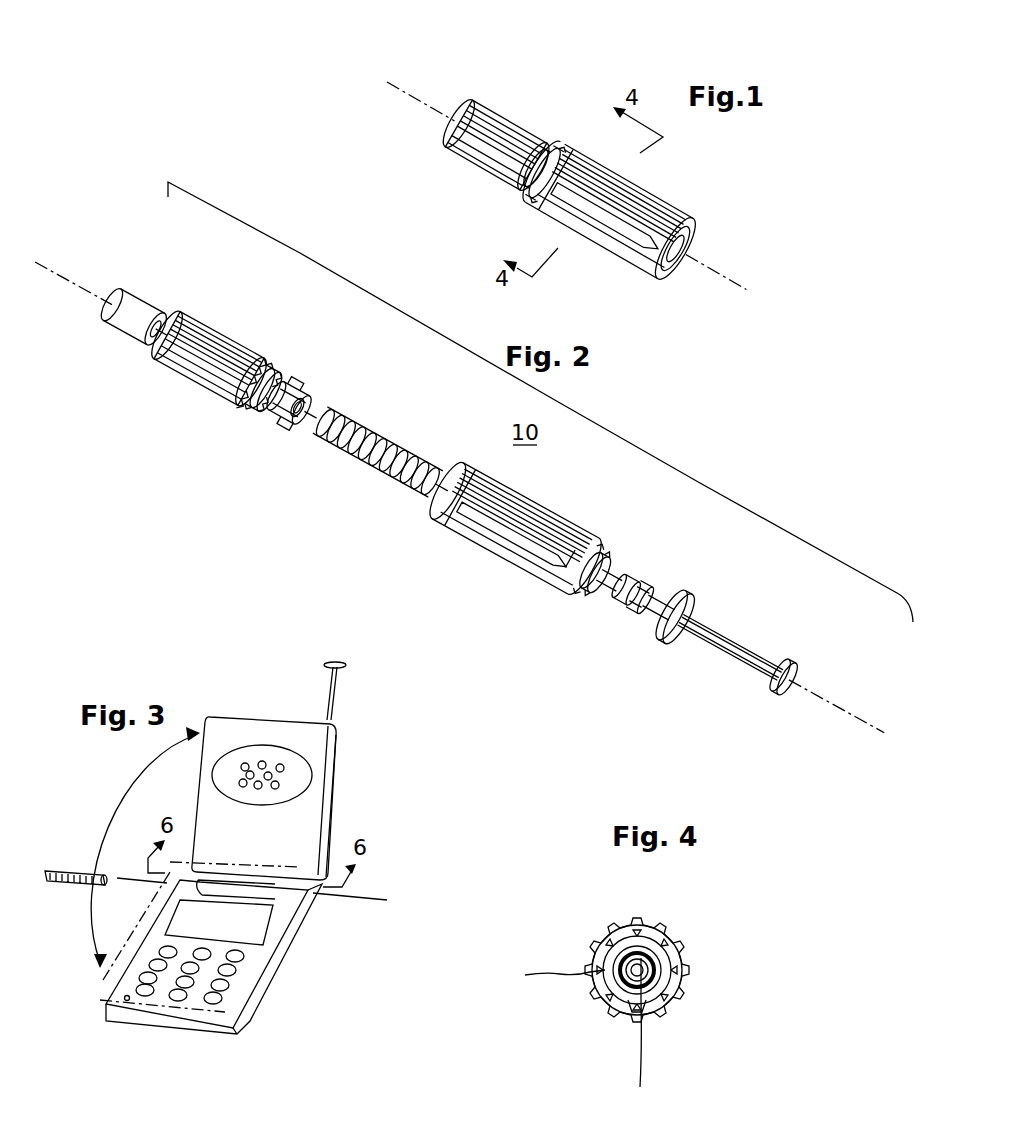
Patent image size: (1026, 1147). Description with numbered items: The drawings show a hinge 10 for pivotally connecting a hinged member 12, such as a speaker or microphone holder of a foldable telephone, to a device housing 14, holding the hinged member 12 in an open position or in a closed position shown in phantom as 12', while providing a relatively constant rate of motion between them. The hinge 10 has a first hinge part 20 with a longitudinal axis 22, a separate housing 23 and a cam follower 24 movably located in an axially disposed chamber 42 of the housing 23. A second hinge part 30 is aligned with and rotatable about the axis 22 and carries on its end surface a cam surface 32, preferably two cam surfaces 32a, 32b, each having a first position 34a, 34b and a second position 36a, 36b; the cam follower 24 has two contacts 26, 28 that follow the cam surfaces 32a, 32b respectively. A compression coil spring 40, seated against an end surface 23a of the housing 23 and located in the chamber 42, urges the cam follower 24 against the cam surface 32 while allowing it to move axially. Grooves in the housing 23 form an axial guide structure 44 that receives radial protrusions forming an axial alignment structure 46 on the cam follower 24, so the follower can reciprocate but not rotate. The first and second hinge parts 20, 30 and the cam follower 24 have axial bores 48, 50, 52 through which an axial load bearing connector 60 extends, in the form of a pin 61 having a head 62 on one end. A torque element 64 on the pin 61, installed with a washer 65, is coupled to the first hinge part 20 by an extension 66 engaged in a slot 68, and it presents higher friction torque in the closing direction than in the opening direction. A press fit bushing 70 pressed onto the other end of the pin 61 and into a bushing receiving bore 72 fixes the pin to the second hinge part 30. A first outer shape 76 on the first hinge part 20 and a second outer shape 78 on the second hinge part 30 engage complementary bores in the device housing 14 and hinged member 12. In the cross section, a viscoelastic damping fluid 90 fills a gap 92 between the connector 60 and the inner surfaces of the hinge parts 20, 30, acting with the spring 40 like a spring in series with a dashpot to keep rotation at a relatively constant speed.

In FIG. 1, the hinge 10 is at (672, 298).
In FIG. 3, the hinge 10 is at (75, 863).
In FIG. 3, the hinged member 12 is at (286, 780).
In FIG. 3, the hinged member in closed position 12' is at (125, 942).
In FIG. 3, the device housing 14 is at (290, 927).
In FIG. 1, the first hinge part 20 is at (607, 243).
In FIG. 2, the first hinge part 20 is at (483, 540).
In FIG. 4, the first hinge part 20 is at (641, 950).
In FIG. 1, the longitudinal axis 22 is at (730, 273).
In FIG. 2, the longitudinal axis 22 is at (847, 710).
In FIG. 3, the longitudinal axis 22 is at (377, 903).
In FIG. 1, the housing 23 is at (688, 210).
In FIG. 2, the housing 23 is at (432, 523).
In FIG. 4, the housing 23 is at (687, 993).
In FIG. 2, the end surface 23a is at (595, 533).
In FIG. 1, the cam follower 24 is at (520, 190).
In FIG. 2, the cam follower 24 is at (273, 433).
In FIG. 4, the cam follower 24 is at (662, 975).
In FIG. 2, the contact 26 is at (260, 420).
In FIG. 2, the contact 28 is at (298, 378).
In FIG. 1, the second hinge part 30 is at (447, 150).
In FIG. 2, the second hinge part 30 is at (173, 367).
In FIG. 1, the cam surface 32 is at (508, 187).
In FIG. 2, the first cam surface 32a is at (237, 397).
In FIG. 2, the second cam surface 32b is at (257, 407).
In FIG. 2, the first position 34a is at (203, 400).
In FIG. 2, the first position 34b is at (263, 368).
In FIG. 2, the second position 36a is at (247, 365).
In FIG. 2, the second position 36b is at (263, 433).
In FIG. 2, the spring 40 is at (360, 468).
In FIG. 2, the chamber 42 is at (452, 463).
In FIG. 4, the chamber 42 is at (670, 963).
In FIG. 4, the axial guide structure 44 is at (613, 927).
In FIG. 2, the axial alignment structure 46 is at (320, 387).
In FIG. 4, the axial alignment structure 46 is at (657, 933).
In FIG. 2, the axial bore 48 is at (563, 593).
In FIG. 2, the axial bore 50 is at (213, 318).
In FIG. 2, the axial bore 52 is at (323, 400).
In FIG. 4, the axial bore 52 is at (630, 1013).
In FIG. 2, the axial load bearing connector 60 is at (760, 680).
In FIG. 2, the pin 61 is at (713, 657).
In FIG. 4, the pin 61 is at (634, 925).
In FIG. 2, the head 62 is at (795, 673).
In FIG. 2, the torque element 64 is at (627, 603).
In FIG. 2, the washer 65 is at (667, 647).
In FIG. 2, the extension 66 is at (645, 583).
In FIG. 2, the slot 68 is at (600, 553).
In FIG. 2, the press fit bushing 70 is at (112, 325).
In FIG. 2, the bushing receiving bore 72 is at (178, 318).
In FIG. 1, the first outer shape 76 is at (647, 180).
In FIG. 1, the second outer shape 78 is at (515, 123).
In FIG. 4, the viscoelastic damping fluid 90 is at (659, 1028).
In FIG. 4, the gap 92 is at (543, 968).